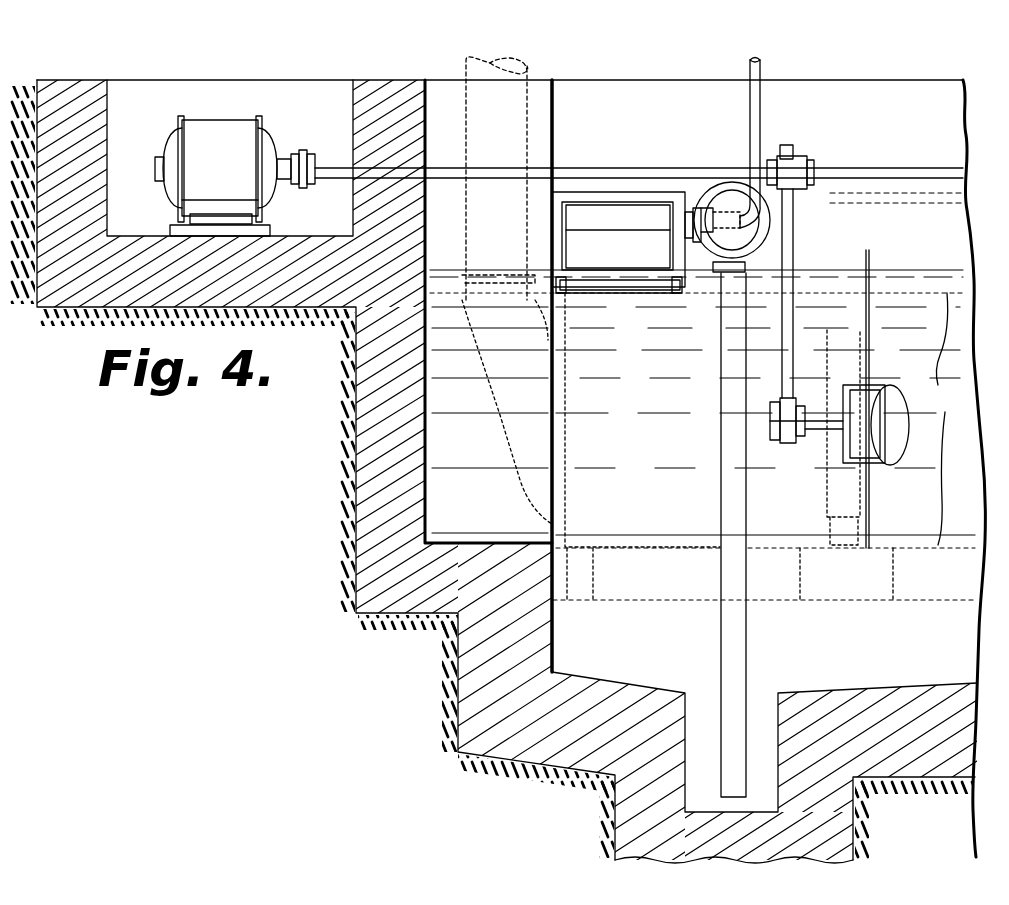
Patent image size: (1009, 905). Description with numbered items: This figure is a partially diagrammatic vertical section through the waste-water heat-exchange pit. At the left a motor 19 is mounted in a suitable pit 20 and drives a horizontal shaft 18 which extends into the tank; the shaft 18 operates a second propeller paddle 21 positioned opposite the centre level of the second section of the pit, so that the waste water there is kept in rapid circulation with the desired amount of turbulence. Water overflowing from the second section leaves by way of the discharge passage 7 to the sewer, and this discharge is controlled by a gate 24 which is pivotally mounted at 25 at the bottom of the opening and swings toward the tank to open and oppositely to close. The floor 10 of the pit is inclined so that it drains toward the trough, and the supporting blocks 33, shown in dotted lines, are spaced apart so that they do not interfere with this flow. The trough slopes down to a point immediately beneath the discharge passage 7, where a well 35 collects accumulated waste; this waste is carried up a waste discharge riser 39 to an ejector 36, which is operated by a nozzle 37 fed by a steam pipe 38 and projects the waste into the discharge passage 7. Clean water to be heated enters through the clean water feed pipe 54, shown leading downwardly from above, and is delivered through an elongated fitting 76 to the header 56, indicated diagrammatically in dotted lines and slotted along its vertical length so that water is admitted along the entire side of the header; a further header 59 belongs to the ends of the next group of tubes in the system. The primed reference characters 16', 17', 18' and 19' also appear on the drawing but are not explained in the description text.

The motor 19 is at (227, 162).
The pit 20 is at (350, 118).
The shaft 18 is at (639, 152).
The clean water inlet or feed pipe 54 is at (468, 136).
The gate 24 is at (615, 236).
The discharge passage 7 is at (655, 205).
The ejector 36 is at (724, 192).
The steam pipe 38 is at (762, 66).
The coupling 18' is at (809, 157).
The vertical shaft 16' is at (817, 293).
The nozzle 37 is at (717, 264).
The elongated fitting 76 is at (498, 388).
The pivot 25 is at (668, 300).
The header 56 is at (762, 298).
The waste discharge riser 39 is at (718, 502).
The second propeller paddle 21 is at (868, 388).
The header 59 is at (870, 480).
The coupling 17' is at (780, 449).
The propeller shaft 19' is at (809, 471).
The supporting blocks 33 is at (594, 574).
The floor 10 is at (652, 598).
The well 35 is at (757, 745).